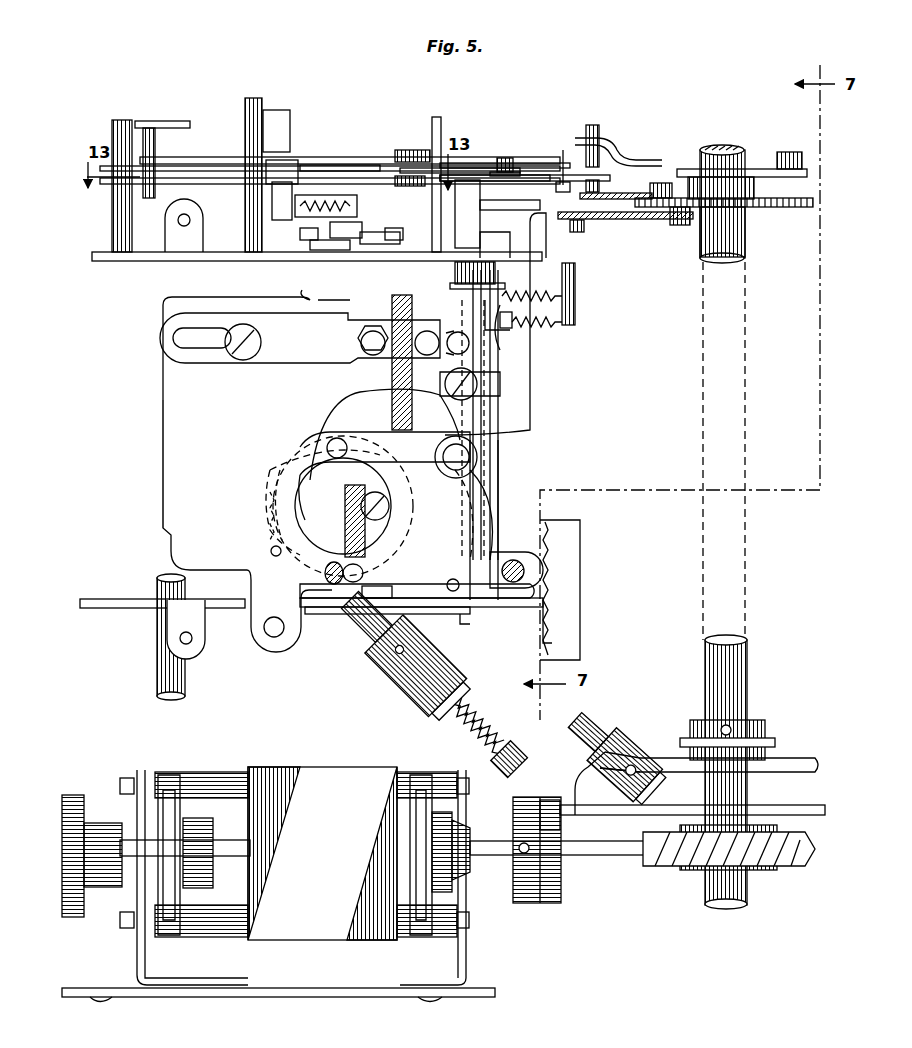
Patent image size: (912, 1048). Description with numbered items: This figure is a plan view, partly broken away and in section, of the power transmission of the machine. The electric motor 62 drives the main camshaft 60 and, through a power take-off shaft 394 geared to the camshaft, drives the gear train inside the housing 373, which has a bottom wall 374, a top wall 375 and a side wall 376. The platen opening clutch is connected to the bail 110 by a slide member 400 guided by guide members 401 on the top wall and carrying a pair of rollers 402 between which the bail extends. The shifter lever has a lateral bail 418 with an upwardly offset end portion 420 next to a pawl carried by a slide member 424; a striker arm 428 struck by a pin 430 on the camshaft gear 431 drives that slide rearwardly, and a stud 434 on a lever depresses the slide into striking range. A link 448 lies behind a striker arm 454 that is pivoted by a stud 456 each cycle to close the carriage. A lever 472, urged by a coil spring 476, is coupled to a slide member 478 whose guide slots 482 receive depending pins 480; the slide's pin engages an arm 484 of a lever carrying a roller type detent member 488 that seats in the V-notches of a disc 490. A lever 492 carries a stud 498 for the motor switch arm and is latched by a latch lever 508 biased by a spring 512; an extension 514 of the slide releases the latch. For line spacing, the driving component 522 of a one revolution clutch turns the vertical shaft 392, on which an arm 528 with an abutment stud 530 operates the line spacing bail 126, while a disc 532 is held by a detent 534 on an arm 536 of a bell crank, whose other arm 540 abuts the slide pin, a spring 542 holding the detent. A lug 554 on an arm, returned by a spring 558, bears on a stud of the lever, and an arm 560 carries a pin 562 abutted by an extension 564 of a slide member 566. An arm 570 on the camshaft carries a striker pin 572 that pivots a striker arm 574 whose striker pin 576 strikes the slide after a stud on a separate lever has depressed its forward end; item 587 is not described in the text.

The main camshaft 60 is at (736, 150).
The electric motor 62 is at (310, 767).
The bail 110 is at (392, 405).
The line spacing bail 126 is at (350, 512).
The housing 373 is at (155, 517).
The bottom wall 374 is at (371, 429).
The top wall 375 is at (163, 479).
The side wall 376 is at (112, 599).
The vertical shaft 392 is at (285, 517).
The power take-off shaft 394 is at (546, 666).
The slide member 400 is at (298, 363).
The guide members 401 is at (241, 324).
The rollers 402 is at (372, 331).
The bail 418 is at (318, 301).
The upwardly offset end portion 420 is at (272, 207).
The slide member 424 is at (562, 150).
The striker arm 428 is at (624, 193).
The pin 430 is at (661, 183).
The gear 431 is at (805, 208).
The stud 434 is at (530, 203).
The link 448 is at (488, 230).
The striker arm 454 is at (610, 219).
The stud 456 is at (680, 225).
The lever 472 is at (506, 286).
The coil spring 476 is at (570, 272).
The slide member 478 is at (500, 375).
The depending pins 480 is at (514, 558).
The guide slots 482 is at (323, 573).
The arm 484 is at (457, 515).
The roller type detent member 488 is at (486, 360).
The disc 490 is at (376, 395).
The lever 492 is at (423, 600).
The stud 498 is at (432, 620).
The latch lever 508 is at (300, 596).
The spring 512 is at (366, 594).
The extension 514 is at (362, 626).
The driving component 522 is at (502, 346).
The arm 528 is at (290, 530).
The abutment stud 530 is at (389, 506).
The disc 532 is at (382, 496).
The detent 534 is at (347, 448).
The arm 536 is at (313, 440).
The arm 540 is at (492, 508).
The spring 542 is at (262, 488).
The lug 554 is at (572, 314).
The spring 558 is at (548, 322).
The arm 560 is at (522, 214).
The pin 562 is at (503, 158).
The extension 564 is at (546, 176).
The slide member 566 is at (470, 163).
The arm 570 is at (756, 169).
The striker pin 572 is at (789, 152).
The striker arm 574 is at (628, 158).
The striker pin 576 is at (604, 140).
The pin 587 is at (443, 456).